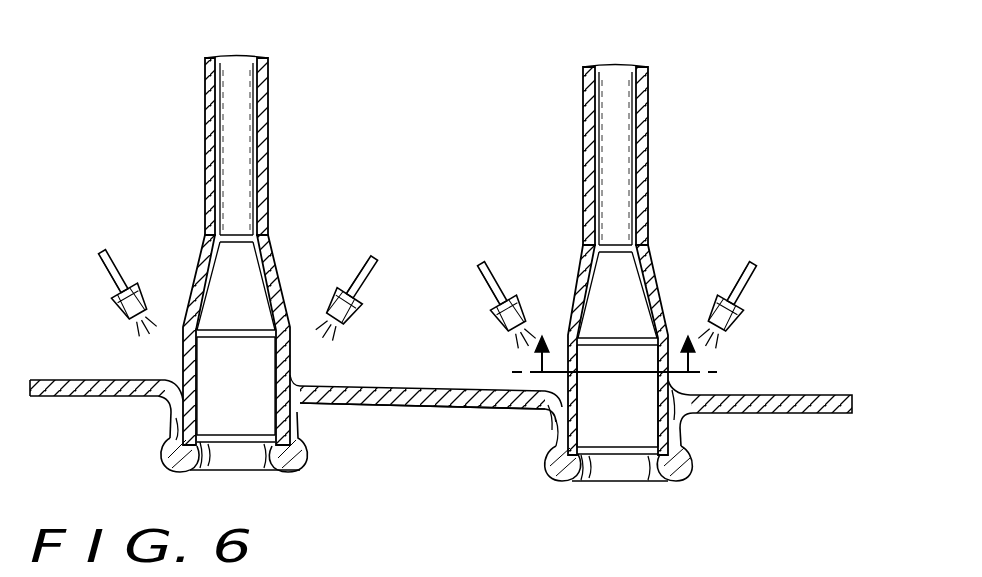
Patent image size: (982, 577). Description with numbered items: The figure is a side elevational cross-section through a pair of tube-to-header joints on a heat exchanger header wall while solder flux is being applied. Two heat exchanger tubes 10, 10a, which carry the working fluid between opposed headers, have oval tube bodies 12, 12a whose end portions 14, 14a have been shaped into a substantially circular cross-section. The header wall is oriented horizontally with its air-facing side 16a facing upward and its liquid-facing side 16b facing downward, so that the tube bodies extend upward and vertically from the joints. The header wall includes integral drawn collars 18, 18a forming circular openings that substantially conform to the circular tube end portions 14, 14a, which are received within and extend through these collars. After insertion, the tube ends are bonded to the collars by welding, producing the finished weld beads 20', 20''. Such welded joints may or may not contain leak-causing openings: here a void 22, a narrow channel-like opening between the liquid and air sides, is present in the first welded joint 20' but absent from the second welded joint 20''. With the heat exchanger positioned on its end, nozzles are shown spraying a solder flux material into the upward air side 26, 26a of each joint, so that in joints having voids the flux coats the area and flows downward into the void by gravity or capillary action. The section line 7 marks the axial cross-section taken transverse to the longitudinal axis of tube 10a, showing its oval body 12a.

The heat exchanger tube 10 is at (274, 80).
The heat exchanger tube 10a is at (580, 62).
The oval tube body 12 is at (205, 66).
The oval tube body 12a is at (648, 96).
The circular tube end portion 14 is at (290, 367).
The circular tube end portion 14a is at (668, 350).
The air-facing side 16a is at (442, 388).
The liquid-facing side 16b is at (424, 406).
The collar 18 is at (170, 408).
The collar 18a is at (683, 430).
The weld bead 20' is at (248, 462).
The weld bead 20'' is at (612, 474).
The void 22 is at (170, 446).
The air side of joint 26 is at (300, 390).
The air side of joint 26a is at (562, 402).
The section line 7 is at (613, 358).